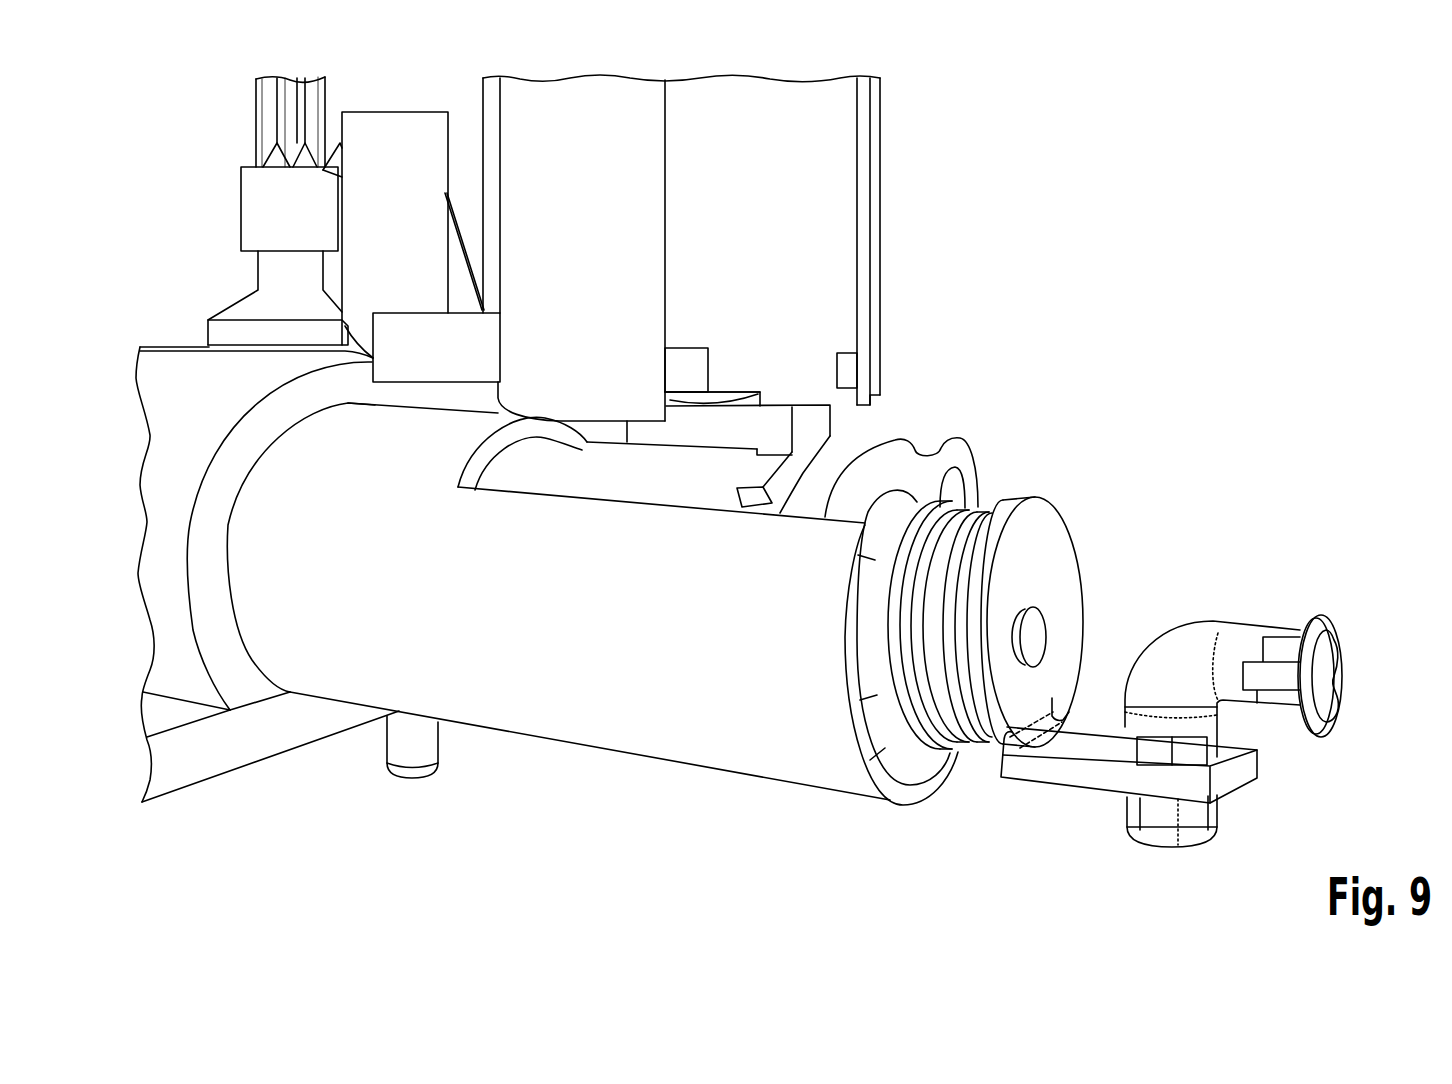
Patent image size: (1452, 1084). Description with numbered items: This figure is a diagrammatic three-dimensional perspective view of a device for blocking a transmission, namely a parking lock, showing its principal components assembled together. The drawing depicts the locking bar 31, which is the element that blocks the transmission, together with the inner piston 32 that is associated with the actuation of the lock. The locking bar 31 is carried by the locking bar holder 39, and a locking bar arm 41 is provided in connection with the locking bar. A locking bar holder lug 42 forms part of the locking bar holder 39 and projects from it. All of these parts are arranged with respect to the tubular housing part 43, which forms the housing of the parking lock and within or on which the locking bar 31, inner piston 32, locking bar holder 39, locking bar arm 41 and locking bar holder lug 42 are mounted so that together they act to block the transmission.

The locking bar 31 is at (807, 441).
The inner piston 32 is at (1042, 630).
The locking bar holder 39 is at (935, 443).
The locking bar arm 41 is at (733, 428).
The locking bar holder lug 42 is at (853, 452).
The tubular housing part 43 is at (745, 742).